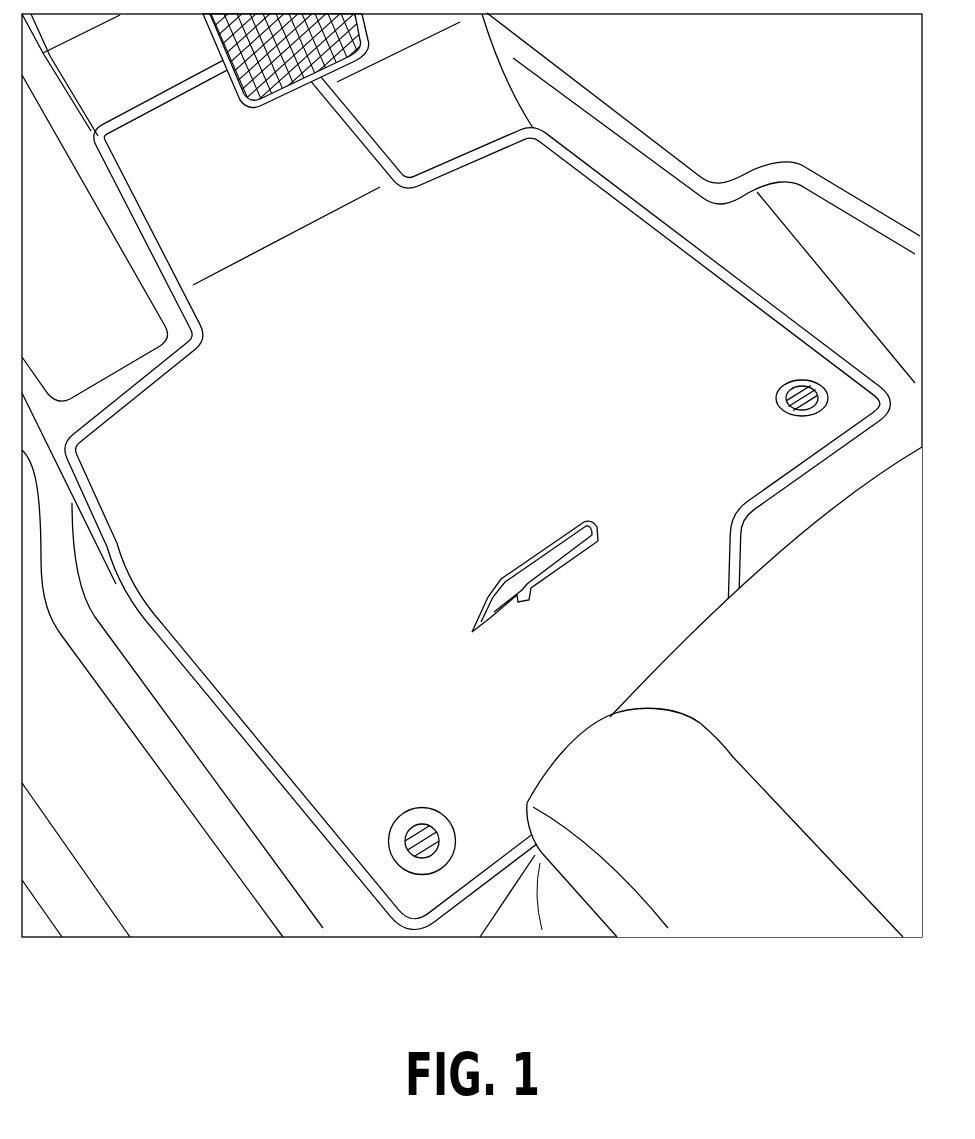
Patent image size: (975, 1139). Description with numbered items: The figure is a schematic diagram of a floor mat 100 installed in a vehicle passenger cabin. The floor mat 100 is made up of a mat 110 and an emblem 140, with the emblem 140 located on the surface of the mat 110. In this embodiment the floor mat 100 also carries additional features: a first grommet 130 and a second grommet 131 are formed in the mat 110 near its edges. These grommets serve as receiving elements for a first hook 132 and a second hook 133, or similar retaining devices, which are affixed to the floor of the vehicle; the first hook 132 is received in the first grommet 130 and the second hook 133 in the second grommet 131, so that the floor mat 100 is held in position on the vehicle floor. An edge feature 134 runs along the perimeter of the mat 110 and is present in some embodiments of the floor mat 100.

The floor mat 100 is at (682, 124).
The mat 110 is at (477, 481).
The first grommet 130 is at (430, 808).
The second grommet 131 is at (777, 395).
The first hook 132 is at (412, 827).
The second hook 133 is at (798, 390).
The edge feature 134 is at (277, 792).
The emblem 140 is at (518, 540).